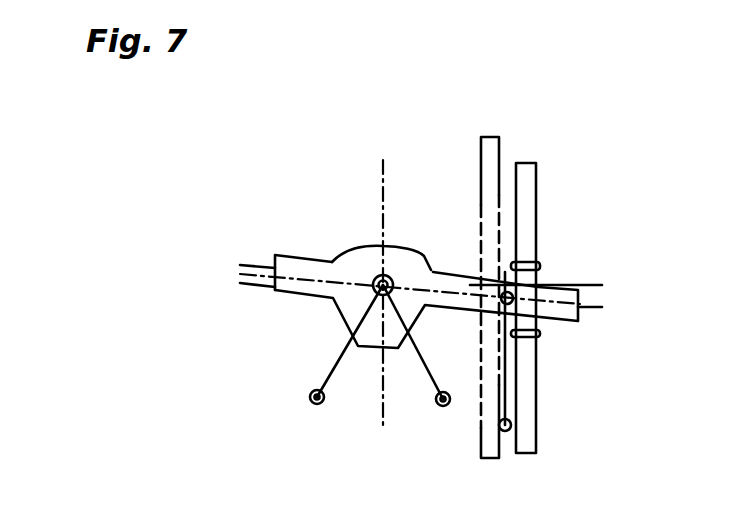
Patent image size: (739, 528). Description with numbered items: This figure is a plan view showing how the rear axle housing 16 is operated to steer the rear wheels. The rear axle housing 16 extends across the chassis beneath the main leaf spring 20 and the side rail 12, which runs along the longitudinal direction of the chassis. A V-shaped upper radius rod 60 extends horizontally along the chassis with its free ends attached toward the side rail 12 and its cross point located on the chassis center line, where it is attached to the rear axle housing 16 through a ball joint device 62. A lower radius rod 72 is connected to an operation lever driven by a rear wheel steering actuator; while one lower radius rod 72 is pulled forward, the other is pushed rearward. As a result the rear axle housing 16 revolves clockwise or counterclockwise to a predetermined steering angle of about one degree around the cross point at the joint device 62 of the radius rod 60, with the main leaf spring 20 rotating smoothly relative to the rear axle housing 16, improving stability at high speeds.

The side rail 12 is at (503, 142).
The rear axle housing 16 is at (300, 253).
The main leaf spring 20 is at (522, 208).
The radius rod 60 is at (334, 368).
The ball joint device 62 is at (435, 272).
The lower radius rod 72 is at (507, 380).